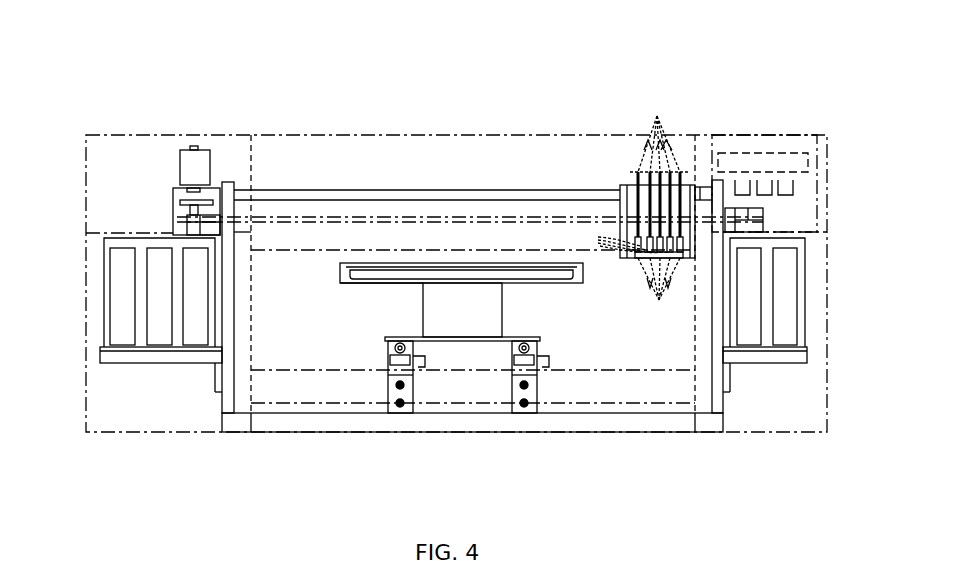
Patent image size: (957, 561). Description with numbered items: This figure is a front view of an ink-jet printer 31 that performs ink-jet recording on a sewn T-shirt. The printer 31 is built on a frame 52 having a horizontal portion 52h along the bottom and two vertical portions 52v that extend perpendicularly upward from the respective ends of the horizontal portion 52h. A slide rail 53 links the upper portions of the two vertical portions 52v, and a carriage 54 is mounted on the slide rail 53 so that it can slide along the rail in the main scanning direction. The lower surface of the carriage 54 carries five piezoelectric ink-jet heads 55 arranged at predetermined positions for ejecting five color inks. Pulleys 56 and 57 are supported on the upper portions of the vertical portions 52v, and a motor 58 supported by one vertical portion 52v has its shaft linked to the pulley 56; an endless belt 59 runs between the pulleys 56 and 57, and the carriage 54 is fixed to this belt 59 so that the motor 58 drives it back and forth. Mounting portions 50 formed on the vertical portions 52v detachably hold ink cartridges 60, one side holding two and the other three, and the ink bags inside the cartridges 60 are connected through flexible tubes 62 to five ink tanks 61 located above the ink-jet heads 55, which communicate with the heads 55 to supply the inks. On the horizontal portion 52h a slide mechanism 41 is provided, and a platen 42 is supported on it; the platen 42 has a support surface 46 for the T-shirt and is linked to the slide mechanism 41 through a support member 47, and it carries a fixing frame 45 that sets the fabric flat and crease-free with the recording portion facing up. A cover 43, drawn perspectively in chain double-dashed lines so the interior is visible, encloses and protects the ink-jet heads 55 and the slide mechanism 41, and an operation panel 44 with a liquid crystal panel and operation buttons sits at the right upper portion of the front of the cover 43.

The ink-jet printer 31 is at (831, 99).
The slide mechanism 41 is at (388, 354).
The platen 42 is at (516, 281).
The cover 43 is at (318, 133).
The operation panel 44 is at (818, 166).
The fixing frame 45 is at (490, 300).
The support surface 46 is at (370, 283).
The support member 47 is at (490, 320).
The mounting portion 50 is at (100, 353).
The frame 52 is at (484, 346).
The horizontal portion 52h is at (714, 434).
The vertical portion 52v is at (226, 397).
The slide rail 53 is at (432, 190).
The carriage 54 is at (625, 173).
The ink-jet head 55 is at (659, 294).
The pulley 56 is at (190, 222).
The pulley 57 is at (763, 214).
The motor 58 is at (205, 155).
The endless belt 59 is at (383, 216).
The ink cartridge 60 is at (192, 300).
The ink tank 61 is at (623, 239).
The flexible tube 62 is at (660, 164).